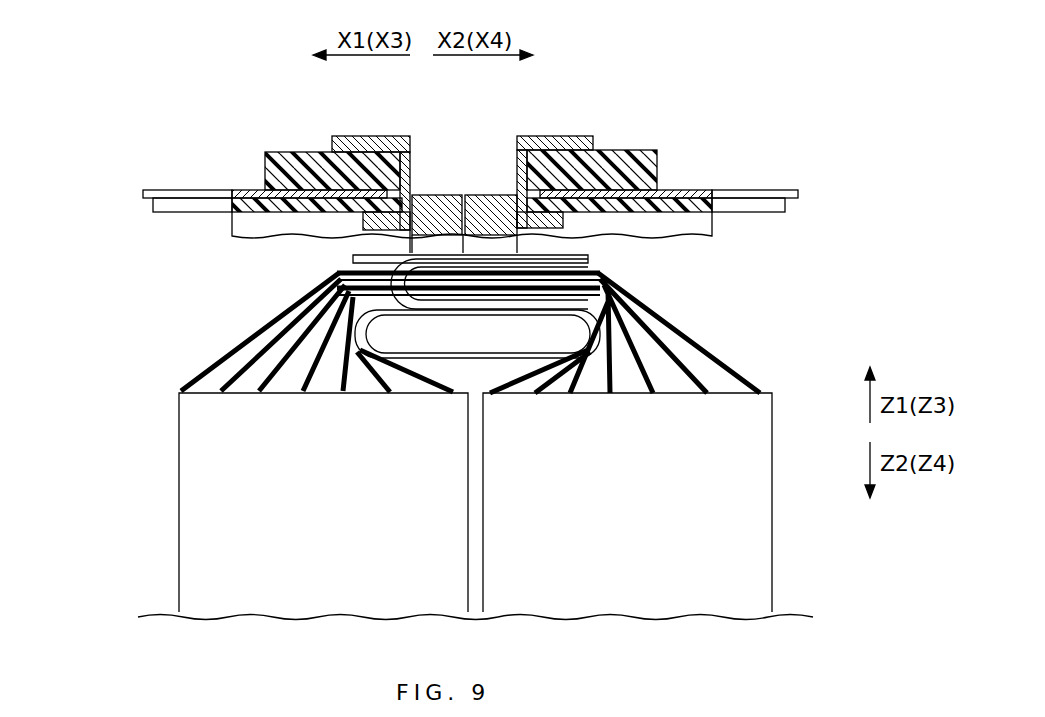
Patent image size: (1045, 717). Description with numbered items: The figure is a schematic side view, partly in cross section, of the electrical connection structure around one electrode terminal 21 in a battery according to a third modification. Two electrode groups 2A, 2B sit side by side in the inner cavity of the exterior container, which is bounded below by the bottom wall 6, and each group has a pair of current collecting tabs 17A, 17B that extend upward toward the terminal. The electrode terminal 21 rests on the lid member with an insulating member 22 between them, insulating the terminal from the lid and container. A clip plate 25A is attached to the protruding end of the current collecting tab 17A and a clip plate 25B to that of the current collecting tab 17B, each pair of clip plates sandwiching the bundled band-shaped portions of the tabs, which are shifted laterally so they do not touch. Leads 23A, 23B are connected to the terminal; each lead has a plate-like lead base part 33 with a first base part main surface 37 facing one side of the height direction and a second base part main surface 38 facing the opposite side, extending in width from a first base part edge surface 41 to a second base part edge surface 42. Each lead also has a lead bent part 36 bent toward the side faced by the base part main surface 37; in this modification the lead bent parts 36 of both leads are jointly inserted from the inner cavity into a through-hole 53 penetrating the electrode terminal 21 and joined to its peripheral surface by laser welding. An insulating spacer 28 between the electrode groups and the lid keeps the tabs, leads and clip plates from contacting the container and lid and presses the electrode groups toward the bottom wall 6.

The electrode group 2A is at (215, 575).
The electrode group 2B is at (735, 573).
The bottom wall 6 is at (748, 186).
The current collecting tabs 17A is at (207, 358).
The current collecting tabs 17B is at (710, 347).
The electrode terminal 21 is at (540, 147).
The insulating member 22 is at (628, 150).
The lead 23A is at (358, 338).
The lead 23B is at (546, 340).
The clip plate 25A is at (353, 258).
The clip plate 25B is at (588, 258).
The spacer 28 is at (755, 218).
The lead base part 33 is at (492, 338).
The lead bent part 36 is at (430, 195).
The base part main surface 37 is at (547, 310).
The base part main surface 38 is at (528, 352).
The base part edge surface 41 is at (352, 327).
The base part edge surface 42 is at (357, 360).
The through-hole 53 is at (455, 150).